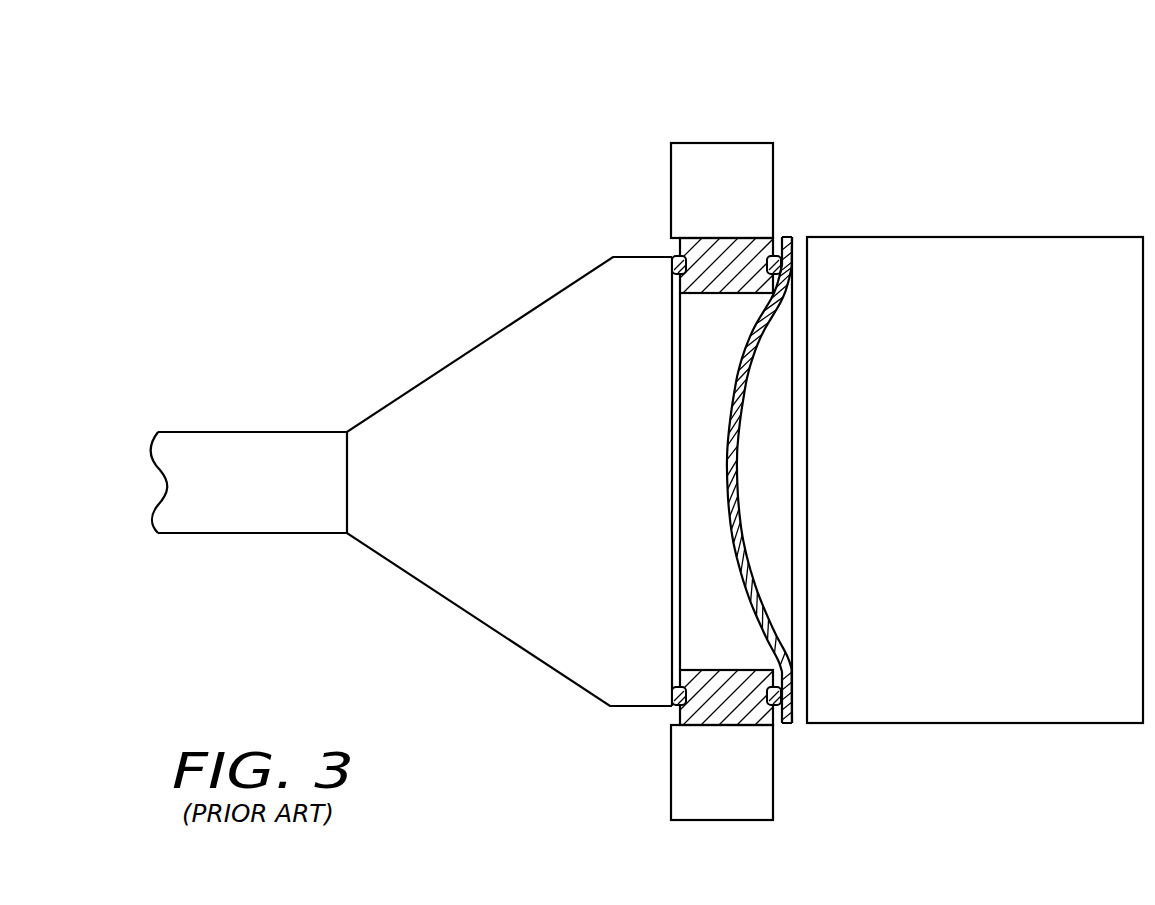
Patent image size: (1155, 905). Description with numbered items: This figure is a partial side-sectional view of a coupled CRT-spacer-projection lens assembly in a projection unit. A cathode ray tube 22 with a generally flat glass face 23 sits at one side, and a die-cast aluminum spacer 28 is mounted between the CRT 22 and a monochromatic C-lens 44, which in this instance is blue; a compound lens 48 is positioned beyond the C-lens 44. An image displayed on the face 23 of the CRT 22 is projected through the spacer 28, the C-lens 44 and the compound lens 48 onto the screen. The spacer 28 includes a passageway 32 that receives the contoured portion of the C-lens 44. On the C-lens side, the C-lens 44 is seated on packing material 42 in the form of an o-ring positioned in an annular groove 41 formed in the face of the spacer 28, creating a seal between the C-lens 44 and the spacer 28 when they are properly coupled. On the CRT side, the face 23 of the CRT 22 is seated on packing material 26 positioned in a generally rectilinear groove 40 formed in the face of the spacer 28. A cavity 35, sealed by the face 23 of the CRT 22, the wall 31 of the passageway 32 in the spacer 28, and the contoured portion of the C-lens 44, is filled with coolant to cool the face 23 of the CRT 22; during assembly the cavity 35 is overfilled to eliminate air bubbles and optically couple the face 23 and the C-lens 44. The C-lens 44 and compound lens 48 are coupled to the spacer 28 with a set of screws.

The cathode ray tube 22 is at (473, 380).
The face of the CRT 23 is at (672, 509).
The packing material 26 is at (672, 259).
The spacer 28 is at (720, 126).
The wall of the passageway 31 is at (743, 280).
The passageway 32 is at (705, 330).
The cavity 35 is at (698, 578).
The rectilinear groove 40 is at (704, 264).
The annular groove 41 is at (752, 262).
The packing material 42 is at (767, 265).
The C-lens 44 is at (787, 237).
The compound lens 48 is at (1050, 237).